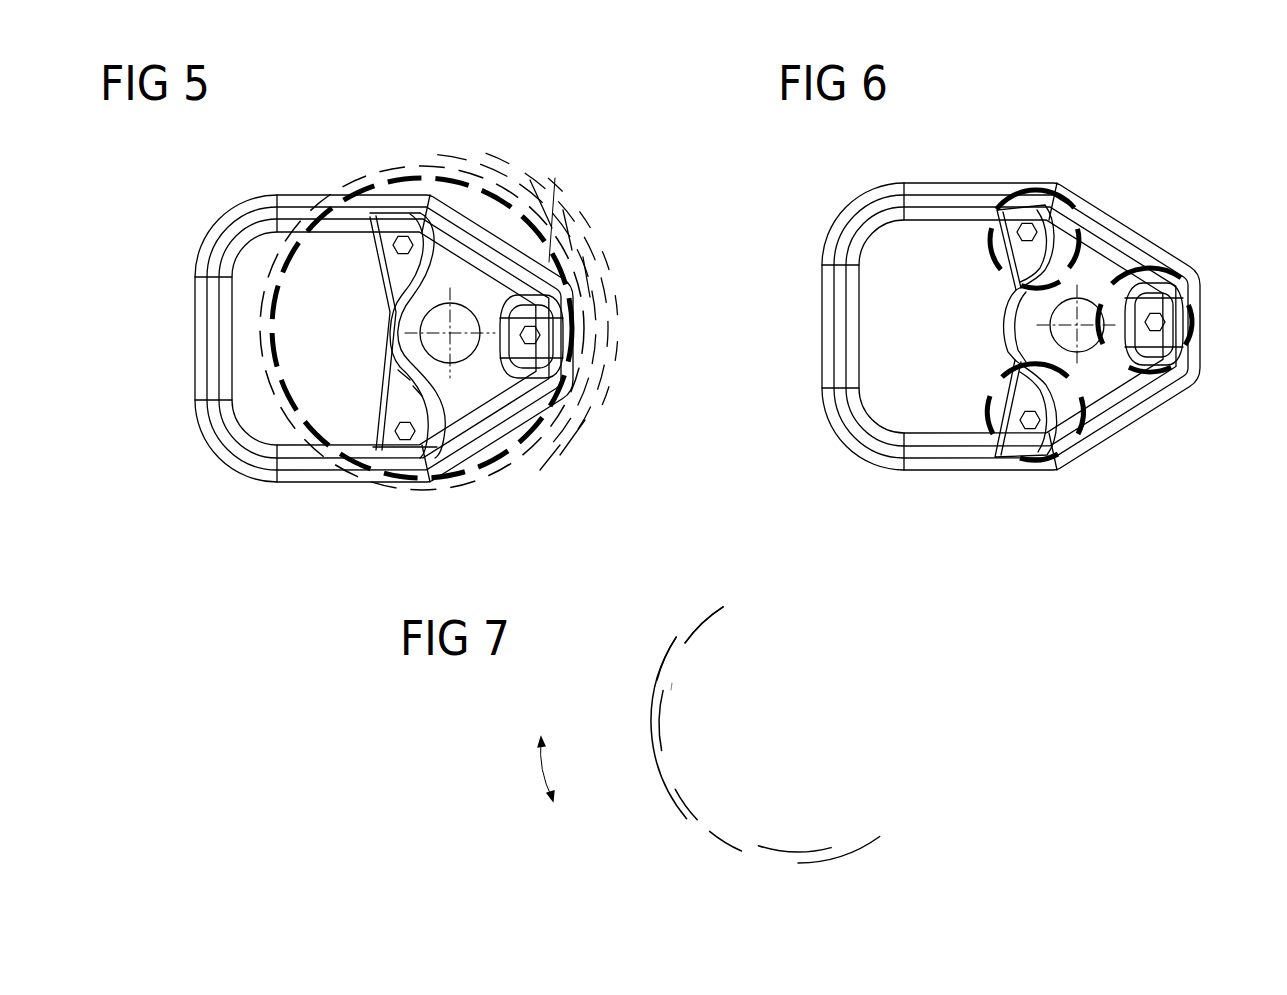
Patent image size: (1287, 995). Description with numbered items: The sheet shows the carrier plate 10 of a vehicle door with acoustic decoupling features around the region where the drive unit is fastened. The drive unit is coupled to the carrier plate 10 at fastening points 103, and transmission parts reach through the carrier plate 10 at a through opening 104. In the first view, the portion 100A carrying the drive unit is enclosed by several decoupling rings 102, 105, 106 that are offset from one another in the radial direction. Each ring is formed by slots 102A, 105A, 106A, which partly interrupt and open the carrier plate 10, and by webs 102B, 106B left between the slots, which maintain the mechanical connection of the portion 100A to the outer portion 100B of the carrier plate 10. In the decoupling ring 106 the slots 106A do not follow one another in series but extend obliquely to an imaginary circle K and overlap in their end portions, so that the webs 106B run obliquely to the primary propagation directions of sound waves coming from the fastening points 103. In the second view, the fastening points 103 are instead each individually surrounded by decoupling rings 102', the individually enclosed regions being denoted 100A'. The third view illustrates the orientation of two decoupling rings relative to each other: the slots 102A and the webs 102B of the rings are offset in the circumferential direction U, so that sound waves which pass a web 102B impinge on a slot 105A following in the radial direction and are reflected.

In FIG. 5, the carrier plate 10 is at (353, 338).
In FIG. 6, the carrier plate 10 is at (989, 342).
In FIG. 5, the portion carrying the drive unit 100A is at (386, 373).
In FIG. 6, the portion carrying the drive unit 100A is at (1206, 330).
In FIG. 6, the clamping jaw plate lobes 100A' is at (976, 363).
In FIG. 5, the outer portion of the carrier plate 100B is at (252, 395).
In FIG. 6, the outer portion of the carrier plate 100B is at (885, 410).
In FIG. 5, the decoupling ring 102 is at (422, 308).
In FIG. 7, the decoupling ring 102 is at (720, 718).
In FIG. 6, the latching ring segments 102' is at (1109, 289).
In FIG. 7, the slots 102A is at (688, 643).
In FIG. 7, the webs 102B is at (672, 683).
In FIG. 5, the fastening points 103 is at (398, 248).
In FIG. 6, the fastening points 103 is at (1040, 235).
In FIG. 5, the through opening 104 is at (455, 312).
In FIG. 6, the through opening 104 is at (1085, 350).
In FIG. 5, the decoupling ring 105 is at (372, 182).
In FIG. 7, the decoupling ring 105 is at (648, 680).
In FIG. 7, the slots 105A is at (650, 705).
In FIG. 5, the decoupling ring 106 is at (474, 165).
In FIG. 5, the slots 106A is at (587, 364).
In FIG. 5, the webs 106B is at (597, 378).
In FIG. 5, the imaginary circle K is at (558, 205).
In FIG. 7, the circumferential direction U is at (535, 769).